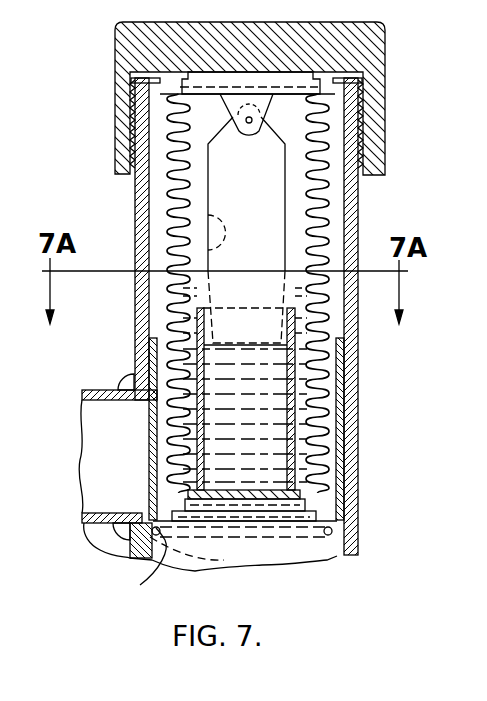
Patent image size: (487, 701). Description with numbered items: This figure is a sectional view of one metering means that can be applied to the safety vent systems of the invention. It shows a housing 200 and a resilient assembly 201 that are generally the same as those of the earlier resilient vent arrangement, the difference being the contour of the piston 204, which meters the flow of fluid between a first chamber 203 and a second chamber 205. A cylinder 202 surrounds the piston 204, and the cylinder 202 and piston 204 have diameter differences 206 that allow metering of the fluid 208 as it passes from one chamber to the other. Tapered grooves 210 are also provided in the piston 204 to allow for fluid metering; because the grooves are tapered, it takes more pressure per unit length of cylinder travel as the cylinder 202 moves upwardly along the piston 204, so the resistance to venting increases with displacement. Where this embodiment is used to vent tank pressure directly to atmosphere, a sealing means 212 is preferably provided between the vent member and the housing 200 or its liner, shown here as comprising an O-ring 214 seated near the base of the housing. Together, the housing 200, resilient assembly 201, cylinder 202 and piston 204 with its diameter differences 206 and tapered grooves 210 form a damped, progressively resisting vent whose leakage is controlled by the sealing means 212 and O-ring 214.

The housing 200 is at (384, 193).
The resilient assembly 201 is at (332, 215).
The cylinder 202 is at (322, 397).
The chamber 203 is at (270, 443).
The piston 204 is at (232, 181).
The chamber 205 is at (307, 123).
The diameter differences 206 is at (290, 332).
The fluid 208 is at (192, 285).
The tapered grooves 210 is at (208, 223).
The sealing means 212 is at (324, 541).
The O-ring 214 is at (150, 565).